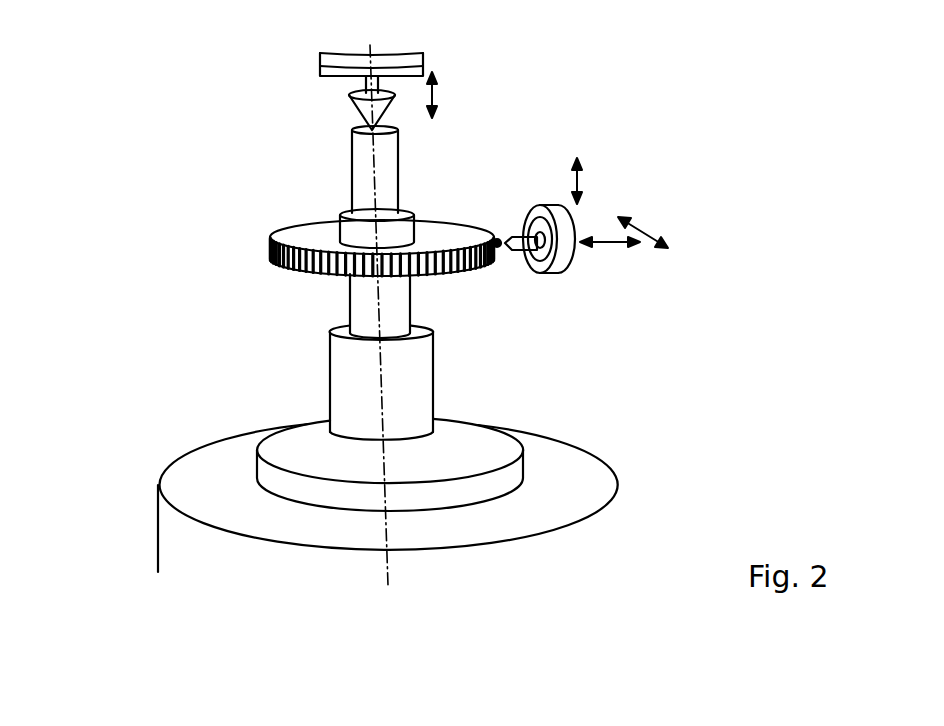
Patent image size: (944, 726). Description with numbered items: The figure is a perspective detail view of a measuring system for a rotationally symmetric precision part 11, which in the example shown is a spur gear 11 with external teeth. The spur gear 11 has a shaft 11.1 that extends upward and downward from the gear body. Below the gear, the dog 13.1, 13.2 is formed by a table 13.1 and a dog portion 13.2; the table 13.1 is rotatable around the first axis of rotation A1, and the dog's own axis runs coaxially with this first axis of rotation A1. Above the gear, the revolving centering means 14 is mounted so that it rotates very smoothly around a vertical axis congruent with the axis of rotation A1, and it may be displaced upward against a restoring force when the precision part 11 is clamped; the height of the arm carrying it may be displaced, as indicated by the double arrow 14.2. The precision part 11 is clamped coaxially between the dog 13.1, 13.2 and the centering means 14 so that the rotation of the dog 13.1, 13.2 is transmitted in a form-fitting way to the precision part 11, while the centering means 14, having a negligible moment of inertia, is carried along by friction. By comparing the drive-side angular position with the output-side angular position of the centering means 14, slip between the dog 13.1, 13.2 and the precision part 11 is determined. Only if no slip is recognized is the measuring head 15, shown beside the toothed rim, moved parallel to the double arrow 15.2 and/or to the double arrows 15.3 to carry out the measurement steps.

The precision part 11 is at (300, 236).
The shaft 11.1 is at (360, 178).
The table 13.1 is at (297, 453).
The dog 13.2 is at (345, 390).
The revolving centering means 14 is at (360, 104).
The double arrow 14.2 is at (438, 91).
The measuring head 15 is at (499, 237).
The double arrow 15.2 is at (581, 160).
The double arrows 15.3 is at (599, 246).
The first axis of rotation A1 is at (386, 329).